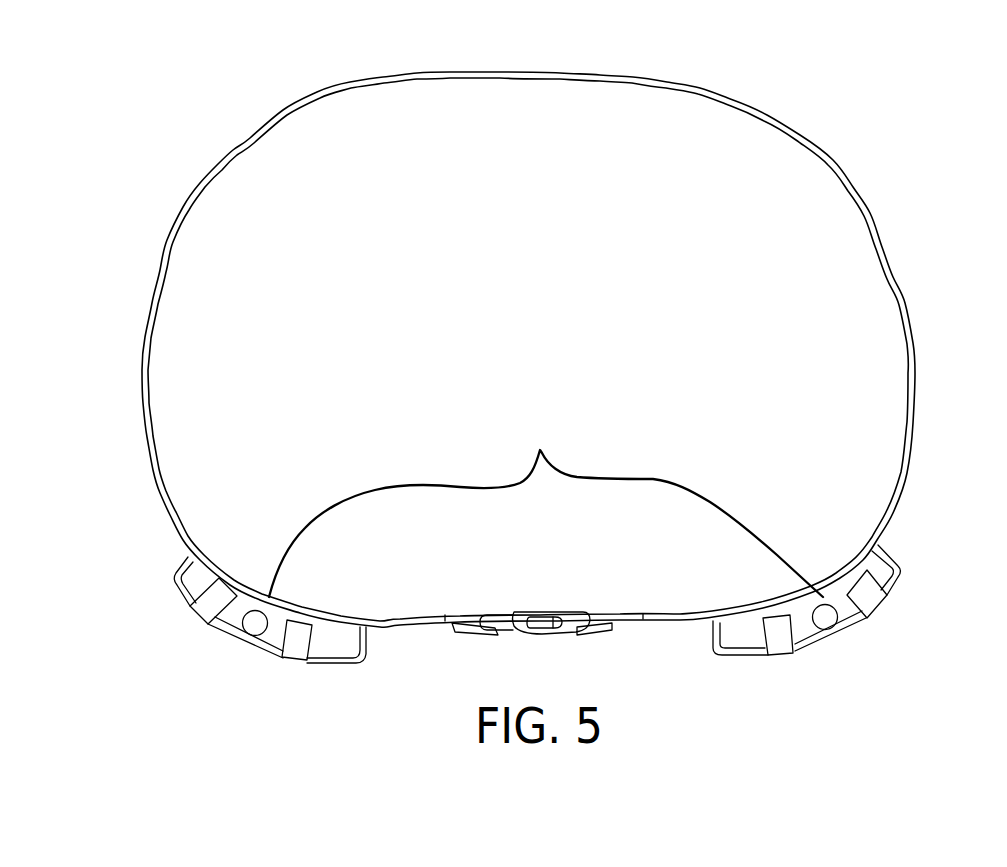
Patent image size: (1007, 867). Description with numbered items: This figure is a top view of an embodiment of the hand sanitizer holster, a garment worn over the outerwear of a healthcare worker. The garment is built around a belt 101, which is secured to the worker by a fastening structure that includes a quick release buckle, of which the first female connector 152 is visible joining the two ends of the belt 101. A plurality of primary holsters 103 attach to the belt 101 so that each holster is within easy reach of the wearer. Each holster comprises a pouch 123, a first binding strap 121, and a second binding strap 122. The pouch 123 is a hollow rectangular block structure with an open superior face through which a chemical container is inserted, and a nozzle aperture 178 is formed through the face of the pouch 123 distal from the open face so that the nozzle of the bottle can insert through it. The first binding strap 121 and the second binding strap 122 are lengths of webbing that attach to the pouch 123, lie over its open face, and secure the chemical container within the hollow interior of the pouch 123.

The belt 101 is at (880, 248).
The plurality of primary holsters 103 is at (540, 452).
The first binding strap 121 is at (202, 612).
The second binding strap 122 is at (297, 633).
The pouch 123 is at (332, 663).
The first female connector 152 is at (532, 617).
The nozzle aperture 178 is at (248, 630).